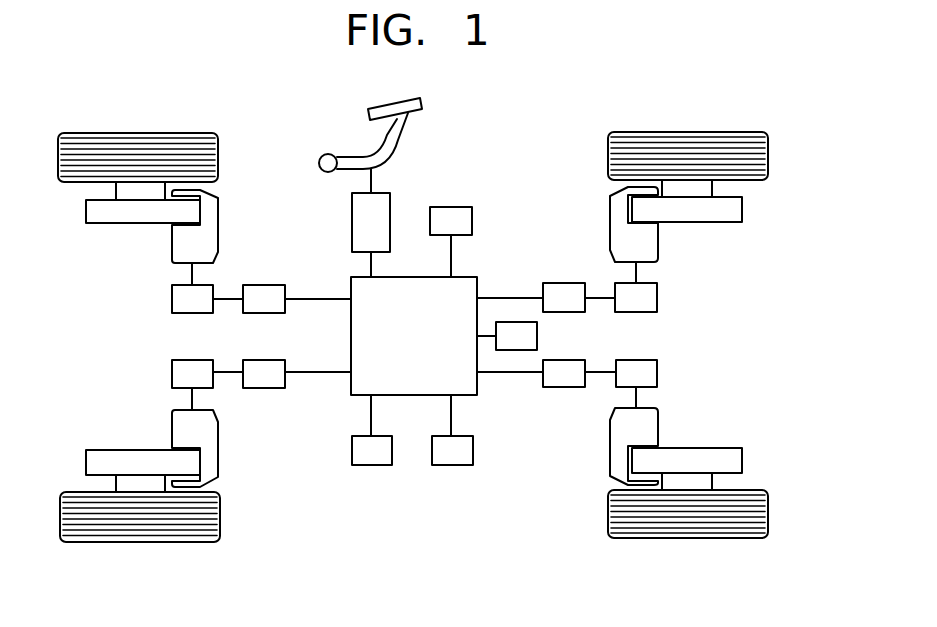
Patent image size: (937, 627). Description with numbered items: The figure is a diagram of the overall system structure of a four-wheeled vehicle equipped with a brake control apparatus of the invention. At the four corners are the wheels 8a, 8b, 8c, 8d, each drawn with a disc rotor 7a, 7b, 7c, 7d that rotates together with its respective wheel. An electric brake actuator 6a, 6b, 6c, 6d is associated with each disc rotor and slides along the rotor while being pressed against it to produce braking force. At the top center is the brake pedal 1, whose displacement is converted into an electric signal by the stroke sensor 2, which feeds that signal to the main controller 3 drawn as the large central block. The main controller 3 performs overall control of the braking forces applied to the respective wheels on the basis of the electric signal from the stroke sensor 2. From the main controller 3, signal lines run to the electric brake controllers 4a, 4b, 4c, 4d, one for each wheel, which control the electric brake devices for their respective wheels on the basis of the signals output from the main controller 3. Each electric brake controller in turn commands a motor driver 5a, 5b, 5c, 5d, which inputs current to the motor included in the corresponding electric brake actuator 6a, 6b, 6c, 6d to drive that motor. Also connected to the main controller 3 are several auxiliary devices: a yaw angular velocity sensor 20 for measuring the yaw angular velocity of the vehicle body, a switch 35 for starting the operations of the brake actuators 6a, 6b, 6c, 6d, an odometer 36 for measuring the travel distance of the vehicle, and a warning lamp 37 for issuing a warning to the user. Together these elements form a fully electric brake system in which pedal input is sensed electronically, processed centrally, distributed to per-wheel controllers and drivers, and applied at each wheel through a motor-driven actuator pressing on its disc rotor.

The brake pedal 1 is at (393, 103).
The stroke sensor 2 is at (352, 202).
The main controller 3 is at (472, 277).
The electric brake controller 4a is at (267, 285).
The electric brake controller 4b is at (267, 388).
The electric brake controller 4c is at (570, 283).
The electric brake controller 4d is at (572, 387).
The motor driver 5a is at (172, 302).
The motor driver 5b is at (172, 375).
The motor driver 5c is at (657, 300).
The motor driver 5d is at (657, 372).
The electric brake actuator 6a is at (170, 253).
The electric brake actuator 6b is at (172, 427).
The electric brake actuator 6c is at (658, 253).
The electric brake actuator 6d is at (658, 427).
The disc rotor 7a is at (86, 213).
The disc rotor 7b is at (86, 465).
The disc rotor 7c is at (742, 213).
The disc rotor 7d is at (742, 465).
The wheel 8a is at (140, 133).
The wheel 8b is at (145, 542).
The wheel 8c is at (705, 132).
The wheel 8d is at (705, 538).
The yaw angular velocity sensor 20 is at (378, 465).
The switch 35 is at (462, 465).
The odometer 36 is at (520, 350).
The warning lamp 37 is at (455, 207).